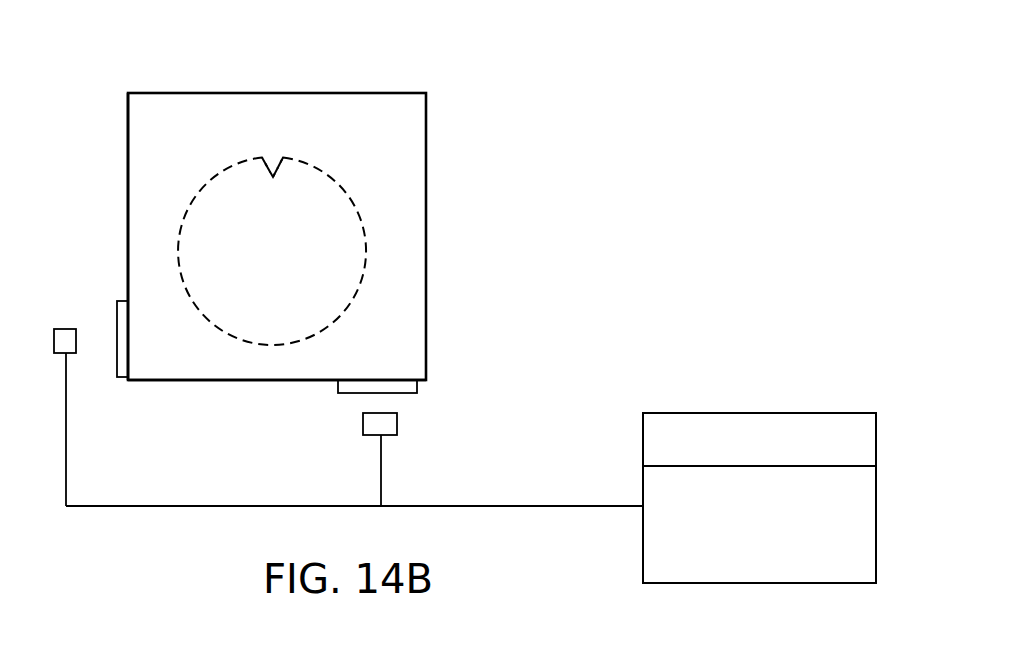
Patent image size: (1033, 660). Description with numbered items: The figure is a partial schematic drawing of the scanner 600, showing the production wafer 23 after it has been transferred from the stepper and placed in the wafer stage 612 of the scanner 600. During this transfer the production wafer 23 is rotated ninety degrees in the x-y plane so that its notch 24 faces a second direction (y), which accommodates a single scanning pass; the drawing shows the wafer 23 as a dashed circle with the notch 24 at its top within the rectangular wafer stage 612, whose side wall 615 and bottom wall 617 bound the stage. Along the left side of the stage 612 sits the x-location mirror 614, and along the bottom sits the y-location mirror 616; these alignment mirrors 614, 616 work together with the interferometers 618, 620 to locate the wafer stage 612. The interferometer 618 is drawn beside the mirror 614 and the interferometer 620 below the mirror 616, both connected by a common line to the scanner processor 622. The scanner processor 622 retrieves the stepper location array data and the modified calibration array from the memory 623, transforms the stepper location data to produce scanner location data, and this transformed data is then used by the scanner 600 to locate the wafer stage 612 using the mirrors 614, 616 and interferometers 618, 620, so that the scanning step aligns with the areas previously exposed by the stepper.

The scanner 600 is at (458, 118).
The wafer stage 612 is at (426, 232).
The housing side wall 615 is at (128, 182).
The production wafer 23 is at (357, 203).
The notch 24 is at (272, 153).
The x-location mirror 614 is at (118, 371).
The y-location mirror 616 is at (345, 393).
The housing bottom wall 617 is at (264, 381).
The interferometer 618 is at (63, 329).
The interferometer 620 is at (398, 425).
The memory 623 is at (643, 437).
The scanner processor 622 is at (643, 539).